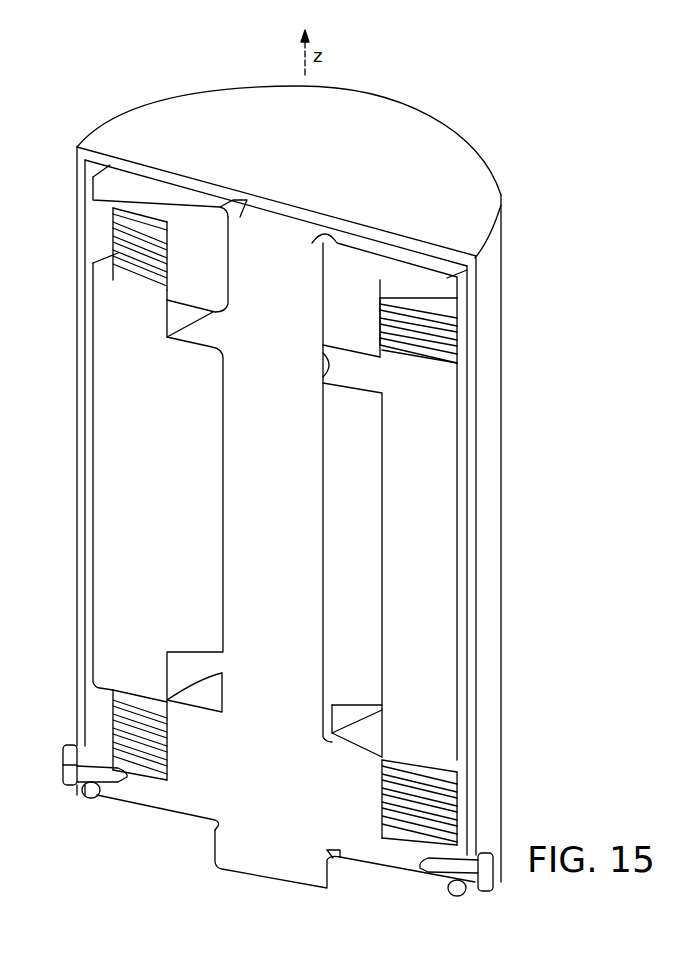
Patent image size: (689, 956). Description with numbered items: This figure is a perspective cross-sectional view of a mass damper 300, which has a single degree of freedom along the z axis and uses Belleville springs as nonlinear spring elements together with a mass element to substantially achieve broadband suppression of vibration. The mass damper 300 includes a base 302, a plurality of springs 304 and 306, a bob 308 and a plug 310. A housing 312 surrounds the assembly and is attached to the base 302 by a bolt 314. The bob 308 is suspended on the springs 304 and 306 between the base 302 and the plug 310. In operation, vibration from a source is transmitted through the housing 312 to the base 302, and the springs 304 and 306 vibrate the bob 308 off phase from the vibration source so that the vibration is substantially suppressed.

The mass damper 300 is at (498, 86).
The base 302 is at (215, 846).
The spring 304 is at (458, 797).
The spring 306 is at (458, 322).
The bob 308 is at (430, 493).
The plug 310 is at (478, 258).
The housing 312 is at (503, 545).
The bolt 314 is at (70, 757).